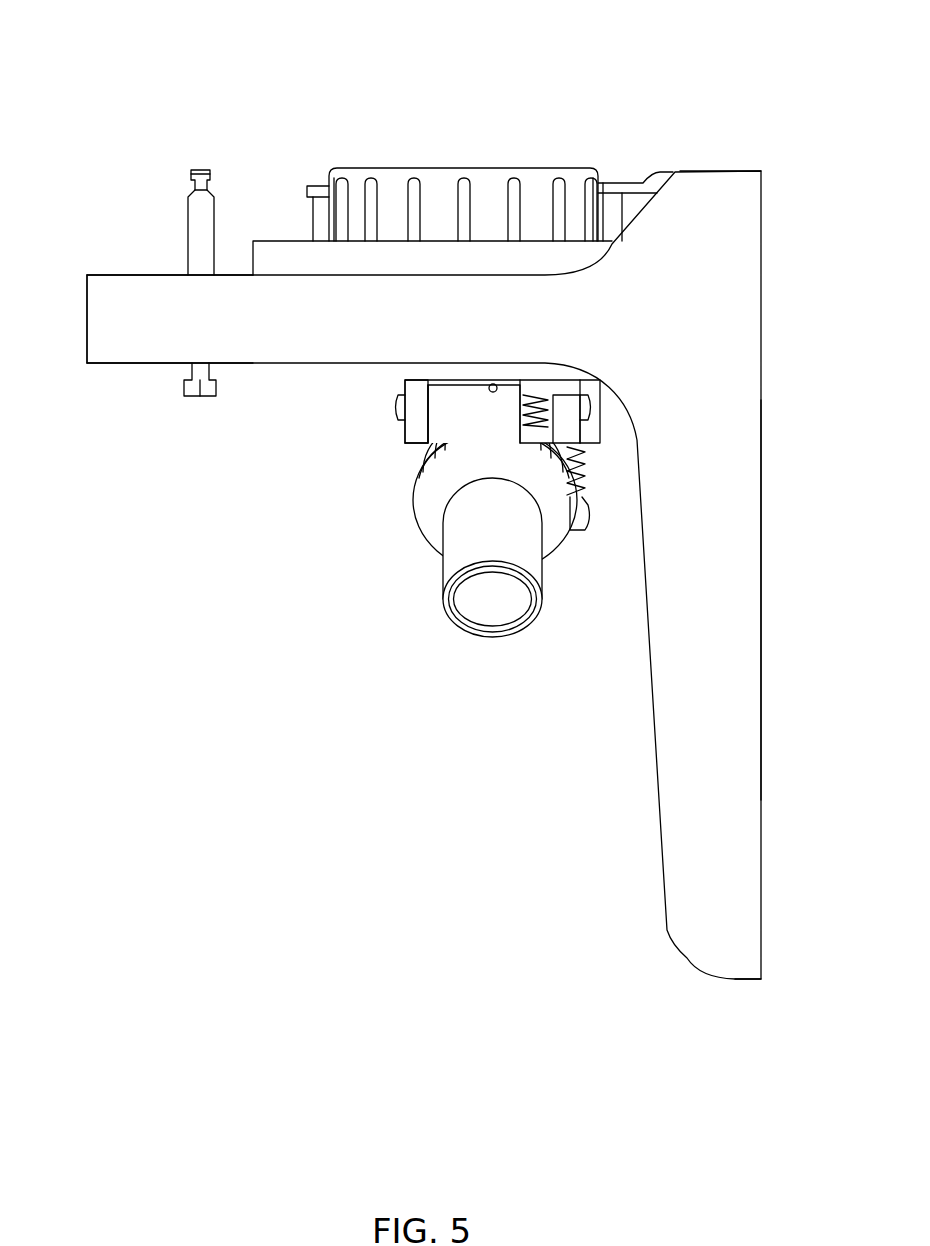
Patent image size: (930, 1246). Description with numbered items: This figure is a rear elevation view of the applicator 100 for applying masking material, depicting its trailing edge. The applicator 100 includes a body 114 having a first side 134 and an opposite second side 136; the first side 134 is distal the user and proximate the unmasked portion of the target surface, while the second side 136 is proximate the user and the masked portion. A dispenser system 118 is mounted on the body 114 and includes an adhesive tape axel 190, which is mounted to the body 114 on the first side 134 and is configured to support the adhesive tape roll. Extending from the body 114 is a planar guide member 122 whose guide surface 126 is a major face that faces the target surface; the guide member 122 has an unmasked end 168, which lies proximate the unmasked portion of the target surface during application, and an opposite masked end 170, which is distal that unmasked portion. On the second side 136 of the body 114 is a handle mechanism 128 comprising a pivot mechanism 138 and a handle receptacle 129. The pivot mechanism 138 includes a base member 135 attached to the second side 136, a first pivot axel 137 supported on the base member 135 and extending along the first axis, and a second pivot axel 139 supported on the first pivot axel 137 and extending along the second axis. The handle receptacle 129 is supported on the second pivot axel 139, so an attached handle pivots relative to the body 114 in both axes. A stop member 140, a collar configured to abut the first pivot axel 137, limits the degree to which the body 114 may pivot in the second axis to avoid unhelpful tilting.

The applicator 100 is at (99, 68).
The body 114 is at (100, 322).
The dispenser system 118 is at (557, 136).
The guide member 122 is at (762, 695).
The guide surface 126 is at (762, 627).
The handle mechanism 128 is at (368, 556).
The handle receptacle 129 is at (533, 565).
The first side 134 is at (131, 274).
The base member 135 is at (440, 375).
The second side 136 is at (131, 365).
The first pivot axel 137 is at (396, 410).
The pivot mechanism 138 is at (342, 409).
The second pivot axel 139 is at (495, 384).
The stop member 140 is at (432, 548).
The unmasked end 168 is at (761, 171).
The masked end 170 is at (753, 980).
The adhesive tape axel 190 is at (388, 187).